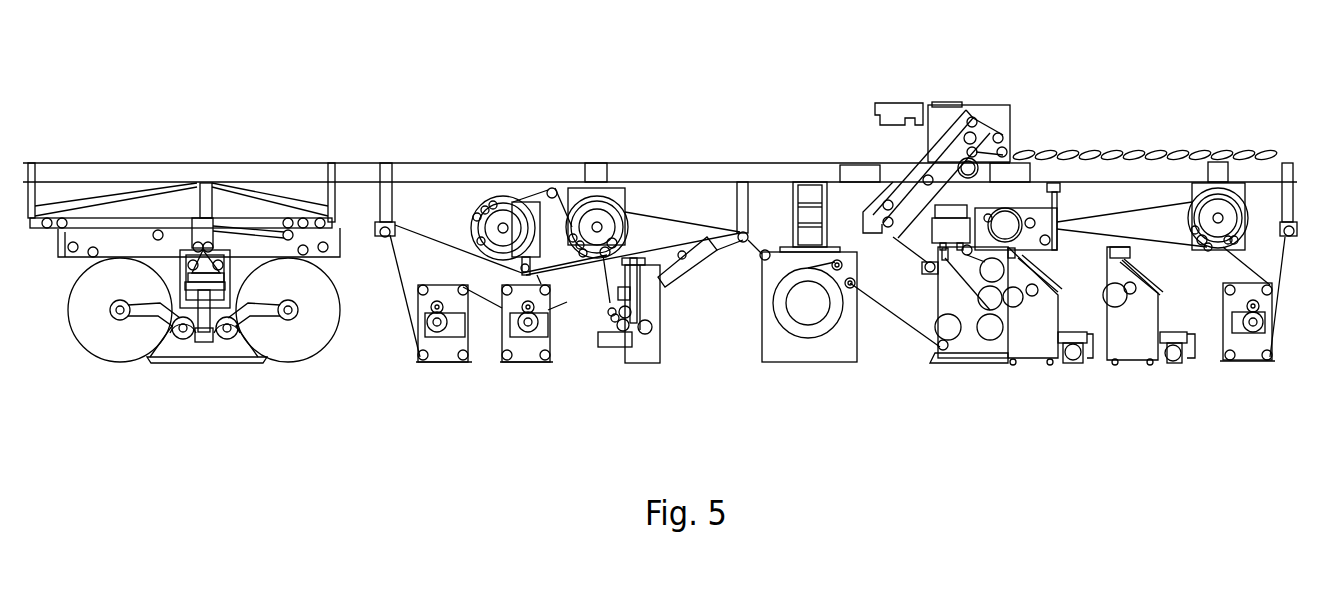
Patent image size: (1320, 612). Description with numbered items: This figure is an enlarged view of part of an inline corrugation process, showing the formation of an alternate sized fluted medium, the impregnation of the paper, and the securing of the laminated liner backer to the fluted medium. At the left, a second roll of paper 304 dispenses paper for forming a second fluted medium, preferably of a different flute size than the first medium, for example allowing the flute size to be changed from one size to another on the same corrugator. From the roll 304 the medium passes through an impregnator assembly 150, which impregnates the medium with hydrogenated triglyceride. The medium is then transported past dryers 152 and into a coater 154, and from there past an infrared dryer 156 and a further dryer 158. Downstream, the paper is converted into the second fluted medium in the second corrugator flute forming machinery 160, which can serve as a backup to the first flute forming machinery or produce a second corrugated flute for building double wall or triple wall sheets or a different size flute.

The second roll of paper 304 is at (118, 342).
The dryers 152 is at (513, 200).
The impregnator assembly 150 is at (445, 363).
The coater 154 is at (645, 362).
The infrared dryer 156 is at (680, 273).
The dryer 158 is at (812, 360).
The second corrugator flute forming machinery 160 is at (963, 358).